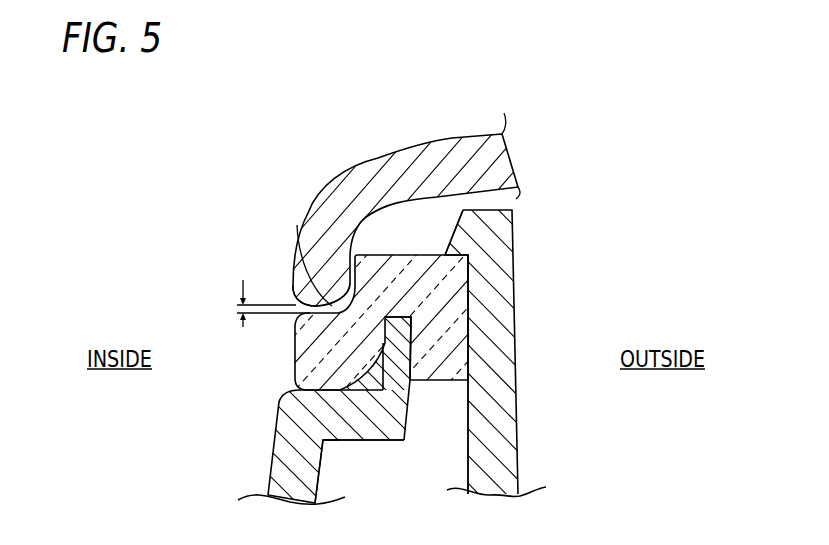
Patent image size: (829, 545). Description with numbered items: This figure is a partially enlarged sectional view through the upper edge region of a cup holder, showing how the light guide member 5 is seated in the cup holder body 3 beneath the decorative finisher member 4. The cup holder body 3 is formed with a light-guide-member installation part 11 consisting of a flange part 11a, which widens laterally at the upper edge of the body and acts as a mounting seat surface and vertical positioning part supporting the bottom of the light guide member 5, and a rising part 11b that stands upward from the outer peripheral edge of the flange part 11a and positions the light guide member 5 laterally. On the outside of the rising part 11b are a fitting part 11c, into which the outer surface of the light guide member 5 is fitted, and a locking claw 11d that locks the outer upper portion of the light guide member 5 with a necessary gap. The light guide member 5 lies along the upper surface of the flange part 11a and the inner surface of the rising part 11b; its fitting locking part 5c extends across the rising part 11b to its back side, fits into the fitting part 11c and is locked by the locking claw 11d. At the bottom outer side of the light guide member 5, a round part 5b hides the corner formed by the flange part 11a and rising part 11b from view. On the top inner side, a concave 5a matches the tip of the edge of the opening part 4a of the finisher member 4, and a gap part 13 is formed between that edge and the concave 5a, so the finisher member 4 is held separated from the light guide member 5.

The cup holder body 3 is at (276, 438).
The finisher member 4 is at (337, 174).
The opening part 4a is at (293, 303).
The light guide member 5 is at (295, 360).
The concave 5a is at (297, 225).
The round part 5b is at (364, 378).
The fitting locking part 5c is at (455, 300).
The light-guide-member installation part 11 is at (422, 482).
The flange part 11a is at (323, 440).
The rising part 11b is at (410, 440).
The fitting part 11c is at (440, 410).
The locking claw 11d is at (443, 256).
The gap part 13 is at (242, 294).